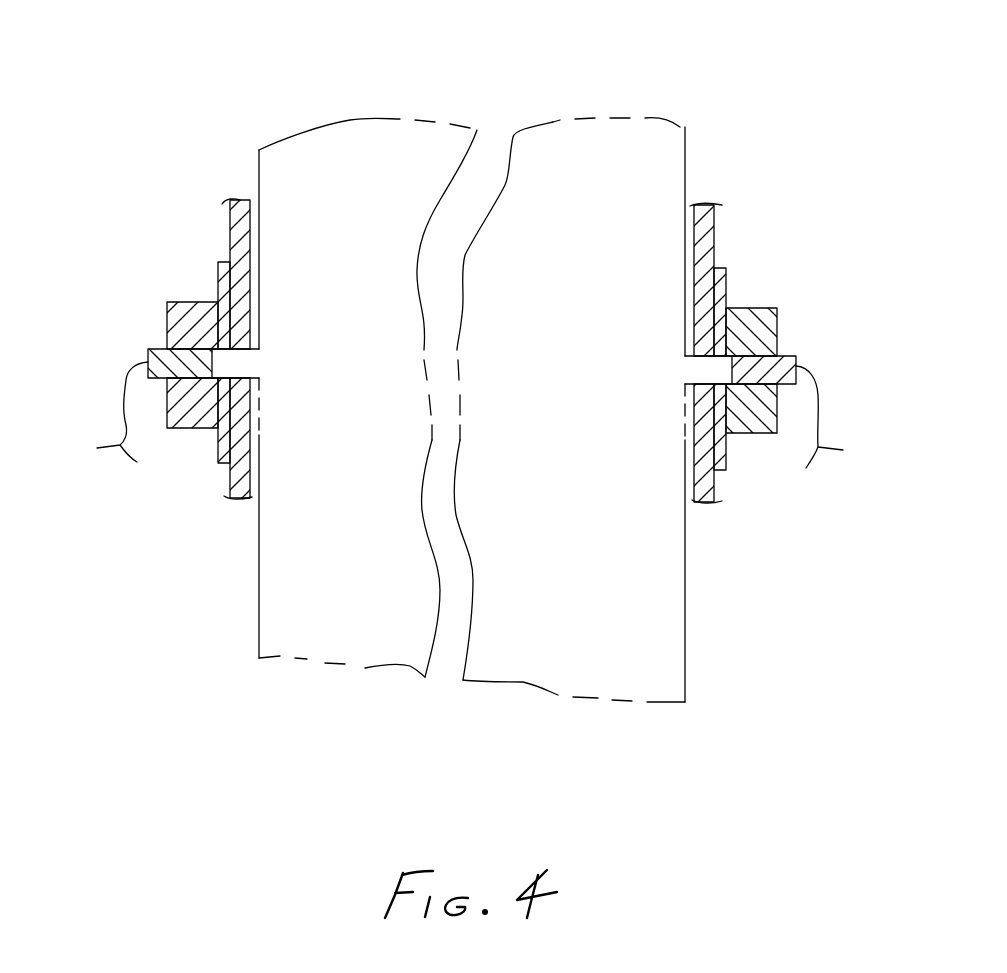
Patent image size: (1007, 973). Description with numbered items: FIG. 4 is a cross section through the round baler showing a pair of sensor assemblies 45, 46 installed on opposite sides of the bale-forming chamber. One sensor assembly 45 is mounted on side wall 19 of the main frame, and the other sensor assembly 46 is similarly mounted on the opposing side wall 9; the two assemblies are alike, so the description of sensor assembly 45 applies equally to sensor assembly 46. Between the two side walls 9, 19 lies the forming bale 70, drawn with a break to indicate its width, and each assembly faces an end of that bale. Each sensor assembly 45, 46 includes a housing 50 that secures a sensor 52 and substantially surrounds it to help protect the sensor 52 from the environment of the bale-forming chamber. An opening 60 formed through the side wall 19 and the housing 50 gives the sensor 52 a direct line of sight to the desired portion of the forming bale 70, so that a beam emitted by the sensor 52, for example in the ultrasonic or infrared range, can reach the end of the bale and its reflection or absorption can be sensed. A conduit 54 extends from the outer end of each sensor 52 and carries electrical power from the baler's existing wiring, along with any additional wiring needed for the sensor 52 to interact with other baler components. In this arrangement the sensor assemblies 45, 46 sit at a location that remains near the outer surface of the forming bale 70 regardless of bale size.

The forming bale 70 is at (358, 122).
The side wall 9 is at (233, 221).
The side wall 19 is at (712, 233).
The housing 50 is at (170, 430).
The sensor 52 is at (153, 350).
The conduit 54 is at (122, 410).
The opening 60 is at (708, 365).
The sensor assembly 46 is at (149, 330).
The sensor assembly 45 is at (768, 342).